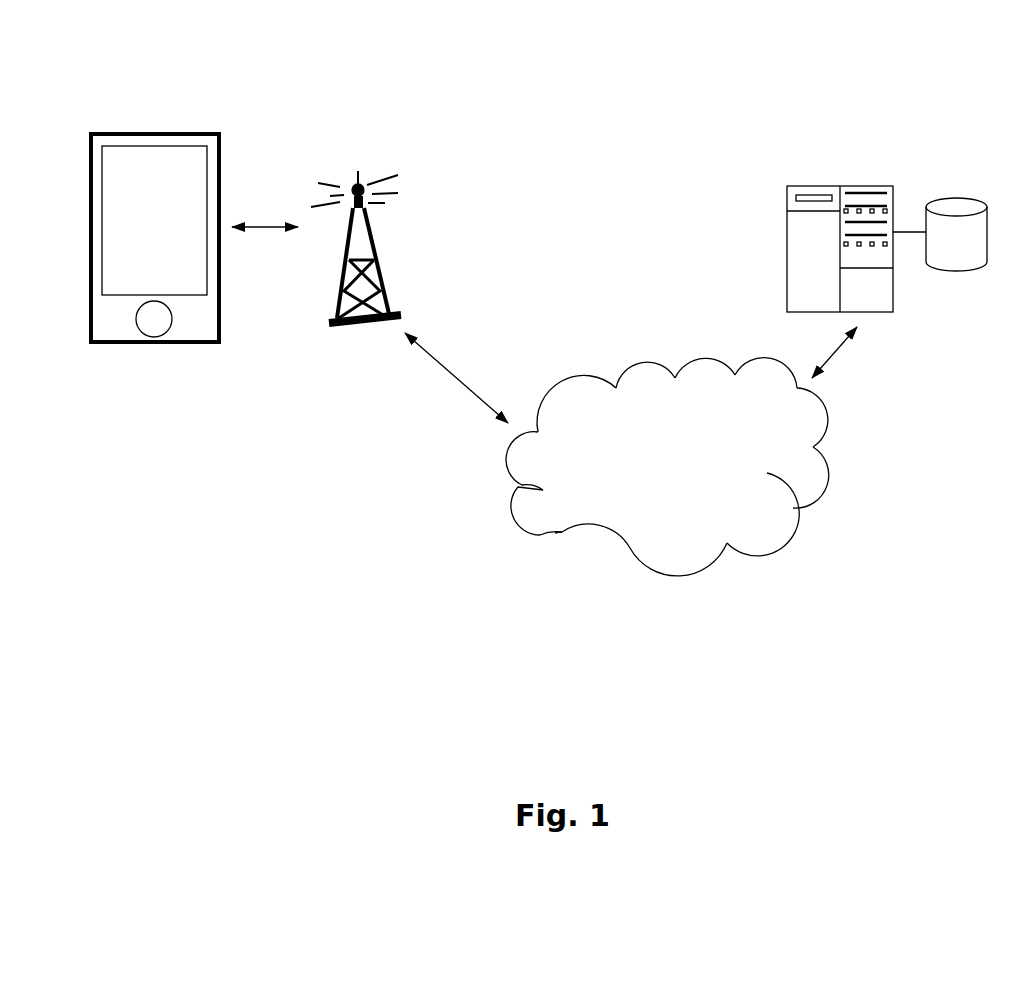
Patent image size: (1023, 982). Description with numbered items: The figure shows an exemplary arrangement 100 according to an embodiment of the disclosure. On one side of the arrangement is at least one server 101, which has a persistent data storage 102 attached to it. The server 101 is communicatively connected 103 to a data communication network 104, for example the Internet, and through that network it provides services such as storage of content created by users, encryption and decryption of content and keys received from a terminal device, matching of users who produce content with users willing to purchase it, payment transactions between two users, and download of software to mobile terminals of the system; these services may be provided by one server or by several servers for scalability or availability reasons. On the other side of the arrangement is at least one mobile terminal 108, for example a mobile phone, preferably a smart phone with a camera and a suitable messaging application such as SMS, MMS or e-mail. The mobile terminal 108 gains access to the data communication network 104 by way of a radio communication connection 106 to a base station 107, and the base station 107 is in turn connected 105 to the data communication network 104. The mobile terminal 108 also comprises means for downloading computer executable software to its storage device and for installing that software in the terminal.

The arrangement 100 is at (555, 100).
The server 101 is at (853, 185).
The persistent data storage 102 is at (957, 197).
The communicative connection 103 is at (833, 345).
The data communication network 104 is at (826, 510).
The connection 105 is at (470, 388).
The radio communication connection 106 is at (270, 226).
The base station 107 is at (370, 229).
The mobile terminal 108 is at (223, 320).